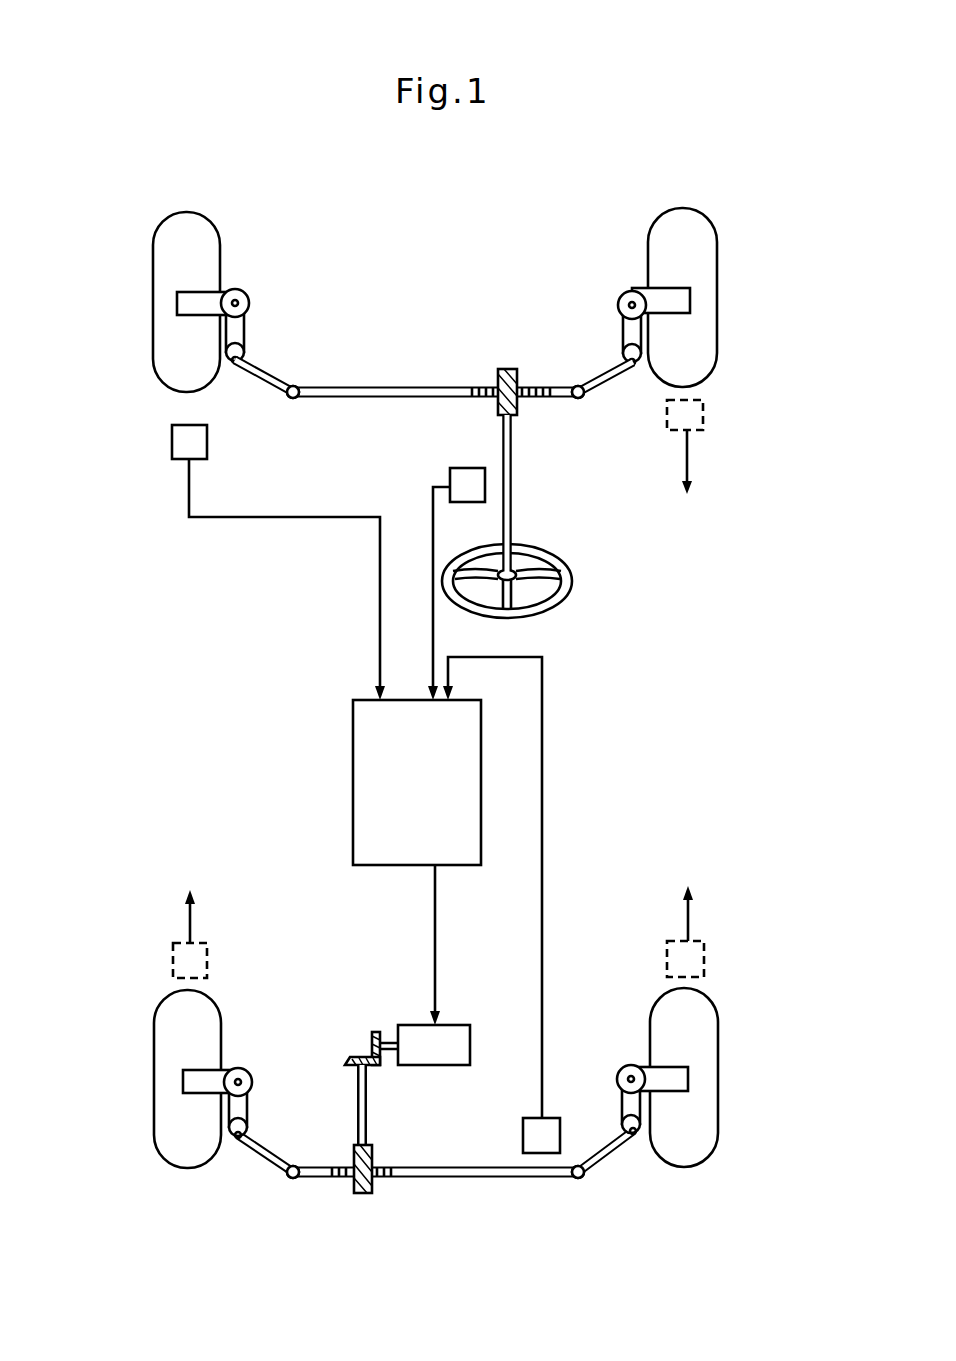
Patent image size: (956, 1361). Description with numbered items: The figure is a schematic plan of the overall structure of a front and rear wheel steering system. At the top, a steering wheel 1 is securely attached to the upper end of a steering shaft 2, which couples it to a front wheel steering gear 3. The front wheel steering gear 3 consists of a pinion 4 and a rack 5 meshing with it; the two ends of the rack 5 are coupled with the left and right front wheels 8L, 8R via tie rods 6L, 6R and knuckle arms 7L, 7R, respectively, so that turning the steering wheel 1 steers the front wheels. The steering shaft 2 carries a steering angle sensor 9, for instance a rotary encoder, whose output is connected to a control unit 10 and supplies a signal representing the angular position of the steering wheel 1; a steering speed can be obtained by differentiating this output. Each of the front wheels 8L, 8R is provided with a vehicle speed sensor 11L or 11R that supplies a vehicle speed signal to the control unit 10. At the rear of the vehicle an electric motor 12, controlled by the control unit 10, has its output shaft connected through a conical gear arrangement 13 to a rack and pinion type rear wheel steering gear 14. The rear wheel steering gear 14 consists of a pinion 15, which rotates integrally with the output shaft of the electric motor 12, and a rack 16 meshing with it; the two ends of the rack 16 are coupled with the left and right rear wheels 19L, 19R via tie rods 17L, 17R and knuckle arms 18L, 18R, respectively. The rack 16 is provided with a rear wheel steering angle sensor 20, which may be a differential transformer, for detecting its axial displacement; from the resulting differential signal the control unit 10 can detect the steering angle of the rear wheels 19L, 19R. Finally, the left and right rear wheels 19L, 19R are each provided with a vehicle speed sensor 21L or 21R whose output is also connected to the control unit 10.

The steering wheel 1 is at (570, 567).
The steering shaft 2 is at (512, 492).
The front wheel steering gear 3 is at (495, 350).
The pinion 4 is at (498, 372).
The rack 5 is at (537, 386).
The tie rod 6L is at (267, 387).
The tie rod 6R is at (607, 382).
The knuckle arm 7L is at (255, 297).
The knuckle arm 7R is at (618, 293).
The front wheel 8L is at (153, 266).
The front wheel 8R is at (717, 253).
The steering angle sensor 9 is at (460, 468).
The control unit 10 is at (353, 740).
The vehicle speed sensor 11L is at (172, 432).
The vehicle speed sensor 11R is at (703, 415).
The electric motor 12 is at (455, 1025).
The conical gear arrangement 13 is at (358, 1044).
The rear wheel steering gear 14 is at (435, 1181).
The pinion 15 is at (373, 1150).
The rack 16 is at (383, 1178).
The tie rod 17L is at (266, 1158).
The tie rod 17R is at (610, 1157).
The knuckle arm 18L is at (258, 1072).
The knuckle arm 18R is at (625, 1062).
The rear wheel 19L is at (222, 1022).
The rear wheel 19R is at (718, 1012).
The rear wheel steering angle sensor 20 is at (523, 1123).
The vehicle speed sensor 21L is at (207, 960).
The vehicle speed sensor 21R is at (667, 958).